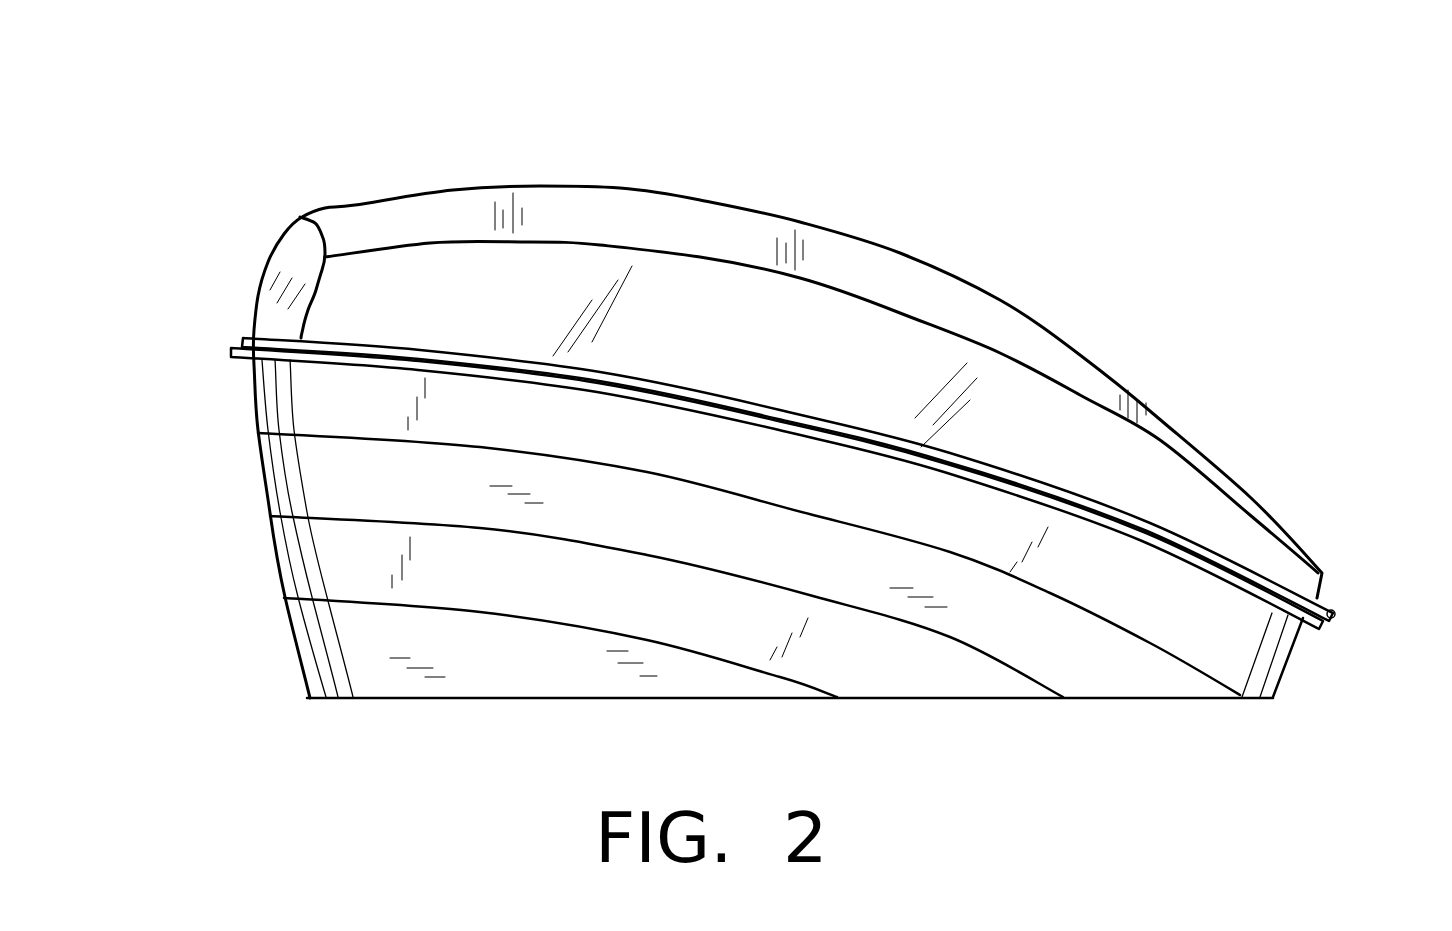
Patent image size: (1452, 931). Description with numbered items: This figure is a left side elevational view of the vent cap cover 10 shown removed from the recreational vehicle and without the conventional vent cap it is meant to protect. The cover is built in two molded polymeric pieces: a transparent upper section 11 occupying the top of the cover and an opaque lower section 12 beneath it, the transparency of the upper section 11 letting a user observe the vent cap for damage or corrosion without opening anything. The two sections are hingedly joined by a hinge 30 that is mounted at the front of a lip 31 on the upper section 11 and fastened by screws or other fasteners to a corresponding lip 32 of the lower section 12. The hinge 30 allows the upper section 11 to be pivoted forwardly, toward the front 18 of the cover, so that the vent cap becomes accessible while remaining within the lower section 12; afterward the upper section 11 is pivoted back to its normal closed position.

The vent cap cover 10 is at (979, 162).
The transparent upper section 11 is at (246, 273).
The opaque lower section 12 is at (233, 459).
The front 18 is at (1320, 668).
The hinge 30 is at (1360, 598).
The lip 31 is at (772, 404).
The lip 32 is at (758, 423).